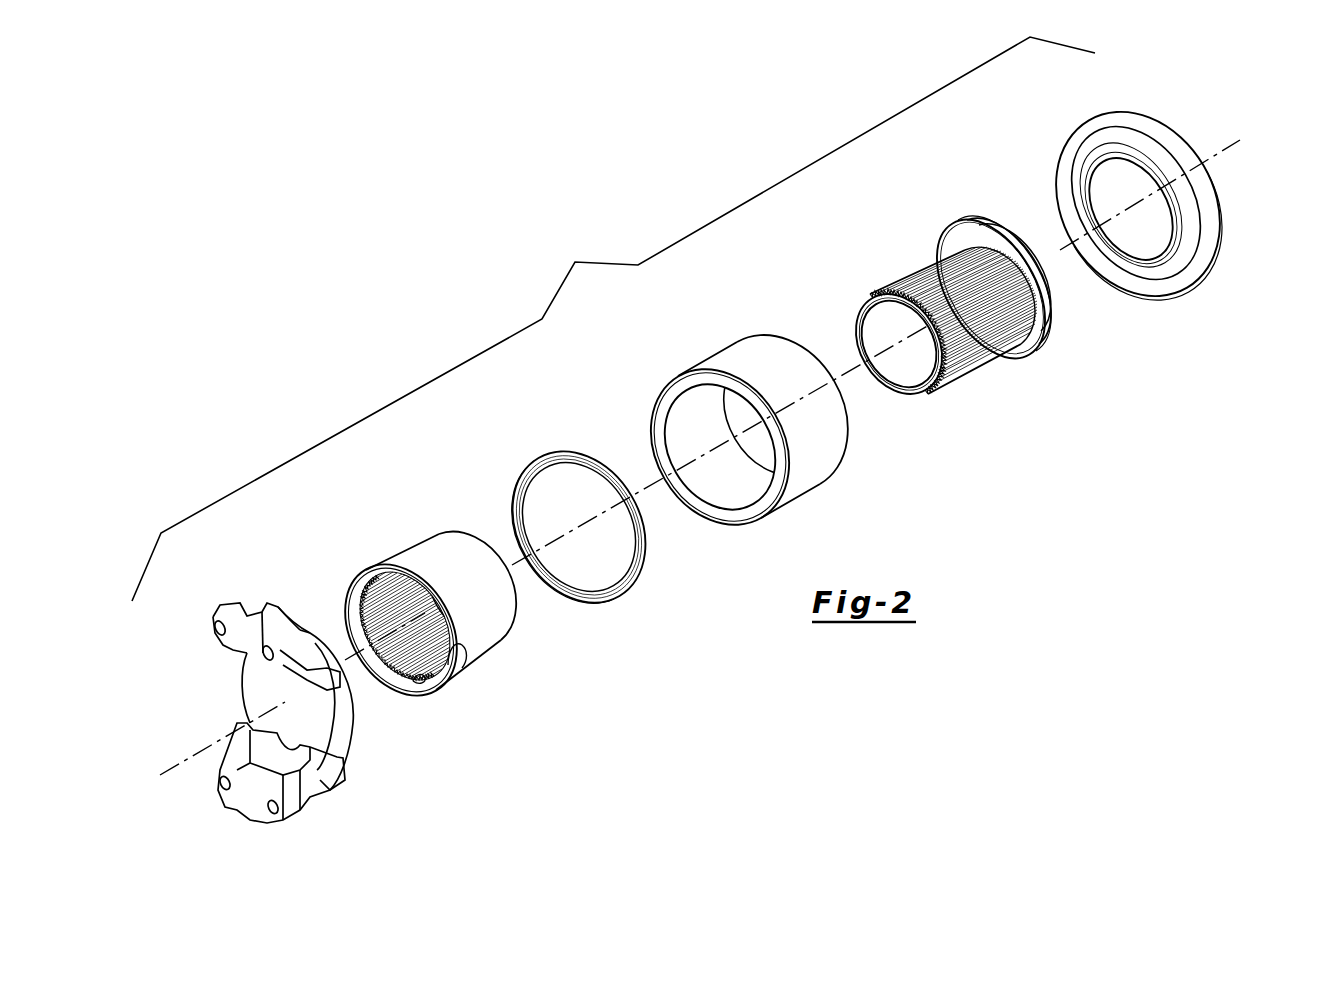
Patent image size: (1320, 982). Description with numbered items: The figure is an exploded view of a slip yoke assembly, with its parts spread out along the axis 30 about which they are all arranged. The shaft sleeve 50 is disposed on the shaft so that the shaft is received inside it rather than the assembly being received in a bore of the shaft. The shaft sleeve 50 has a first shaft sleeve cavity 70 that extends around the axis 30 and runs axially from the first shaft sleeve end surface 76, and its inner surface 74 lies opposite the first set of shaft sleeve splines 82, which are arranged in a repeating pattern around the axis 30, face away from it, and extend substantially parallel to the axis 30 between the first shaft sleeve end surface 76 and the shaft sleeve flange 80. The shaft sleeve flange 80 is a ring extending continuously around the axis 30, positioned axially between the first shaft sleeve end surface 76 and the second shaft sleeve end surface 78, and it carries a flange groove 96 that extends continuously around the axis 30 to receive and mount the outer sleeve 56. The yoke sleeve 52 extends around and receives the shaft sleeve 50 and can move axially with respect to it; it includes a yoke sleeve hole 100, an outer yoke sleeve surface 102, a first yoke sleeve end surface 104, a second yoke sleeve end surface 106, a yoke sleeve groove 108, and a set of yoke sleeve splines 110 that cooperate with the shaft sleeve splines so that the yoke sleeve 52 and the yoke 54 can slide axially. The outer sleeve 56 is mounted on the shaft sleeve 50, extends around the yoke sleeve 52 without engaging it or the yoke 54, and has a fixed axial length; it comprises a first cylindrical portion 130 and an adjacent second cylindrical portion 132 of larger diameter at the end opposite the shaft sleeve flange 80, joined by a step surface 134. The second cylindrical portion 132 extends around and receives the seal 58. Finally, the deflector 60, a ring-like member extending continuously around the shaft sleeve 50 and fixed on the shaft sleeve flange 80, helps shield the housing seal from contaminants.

The axis 30 is at (1245, 143).
The shaft sleeve 50 is at (958, 301).
The yoke sleeve 52 is at (434, 610).
The yoke 54 is at (262, 600).
The outer sleeve 56 is at (726, 435).
The seal 58 is at (648, 558).
The deflector 60 is at (1117, 118).
The first shaft sleeve cavity 70 is at (907, 350).
The inner surface 74 is at (878, 332).
The first shaft sleeve end surface 76 is at (868, 300).
The second shaft sleeve end surface 78 is at (1045, 230).
The shaft sleeve flange 80 is at (985, 220).
The first set of shaft sleeve splines 82 is at (968, 362).
The flange groove 96 is at (1050, 318).
The yoke sleeve hole 100 is at (372, 636).
The outer yoke sleeve surface 102 is at (480, 618).
The first yoke sleeve end surface 104 is at (356, 580).
The second yoke sleeve end surface 106 is at (505, 522).
The yoke sleeve groove 108 is at (418, 682).
The set of yoke sleeve splines 110 is at (437, 648).
The first cylindrical portion 130 is at (800, 465).
The second cylindrical portion 132 is at (733, 518).
The step surface 134 is at (655, 415).